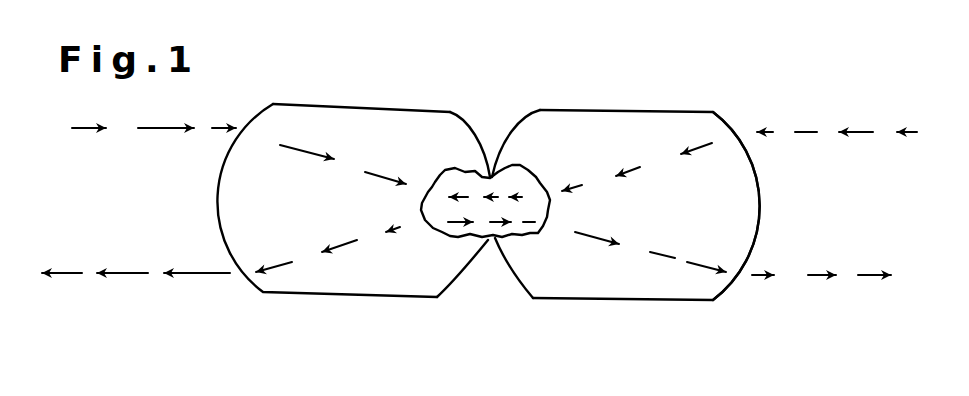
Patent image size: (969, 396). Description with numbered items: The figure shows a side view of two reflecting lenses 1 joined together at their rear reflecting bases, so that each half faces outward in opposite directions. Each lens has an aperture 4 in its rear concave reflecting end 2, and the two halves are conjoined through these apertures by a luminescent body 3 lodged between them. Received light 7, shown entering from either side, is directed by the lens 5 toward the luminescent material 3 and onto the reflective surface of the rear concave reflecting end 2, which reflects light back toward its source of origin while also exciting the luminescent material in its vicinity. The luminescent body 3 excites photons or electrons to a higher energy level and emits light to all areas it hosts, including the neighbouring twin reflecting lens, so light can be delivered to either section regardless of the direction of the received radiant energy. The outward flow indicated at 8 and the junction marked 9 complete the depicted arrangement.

The reflecting lenses 1 is at (636, 106).
The rear concave reflecting ends 2 is at (527, 135).
The luminescent body 3 is at (490, 177).
The apertures 4 is at (473, 245).
The lens 5 is at (768, 204).
The received light 7 is at (229, 114).
The outlet flow 8 is at (209, 289).
The combustion / mixing zone 9 is at (492, 240).